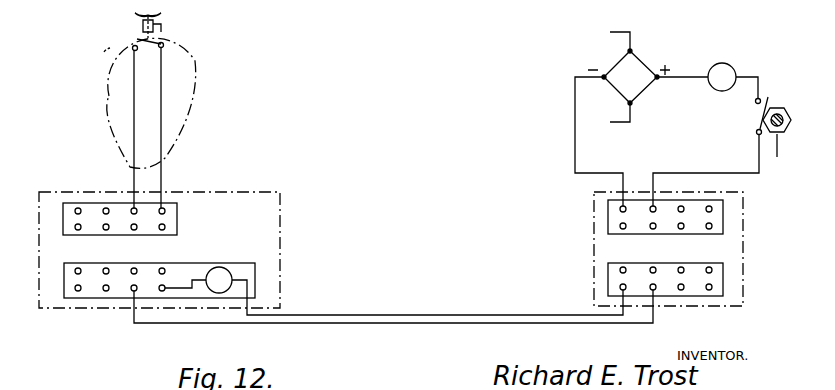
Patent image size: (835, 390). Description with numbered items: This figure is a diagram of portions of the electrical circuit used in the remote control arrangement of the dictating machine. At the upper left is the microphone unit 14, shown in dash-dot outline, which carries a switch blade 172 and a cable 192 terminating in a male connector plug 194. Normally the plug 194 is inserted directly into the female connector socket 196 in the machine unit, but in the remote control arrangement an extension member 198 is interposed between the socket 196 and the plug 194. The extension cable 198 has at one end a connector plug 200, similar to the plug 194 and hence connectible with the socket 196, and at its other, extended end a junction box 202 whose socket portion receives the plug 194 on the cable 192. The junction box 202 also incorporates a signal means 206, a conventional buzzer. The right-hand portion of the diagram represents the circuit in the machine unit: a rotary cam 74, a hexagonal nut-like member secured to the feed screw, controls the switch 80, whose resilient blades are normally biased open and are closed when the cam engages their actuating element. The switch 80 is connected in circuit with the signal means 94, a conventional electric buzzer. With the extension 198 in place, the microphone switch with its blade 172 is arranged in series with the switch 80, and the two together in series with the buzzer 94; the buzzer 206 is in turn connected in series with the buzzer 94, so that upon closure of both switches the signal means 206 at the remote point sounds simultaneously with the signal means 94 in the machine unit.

The microphone unit 14 is at (192, 107).
The switch blade 172 is at (146, 50).
The cable 192 is at (165, 173).
The male connector plug 194 is at (173, 220).
The junction box 202 is at (248, 271).
The signal means 206 is at (220, 268).
The extension member 198 is at (407, 327).
The signal means 94 is at (720, 63).
The switch 80 is at (783, 101).
The rotary cam 74 is at (779, 144).
The female connector socket 196 is at (620, 213).
The connector plug 200 is at (617, 284).